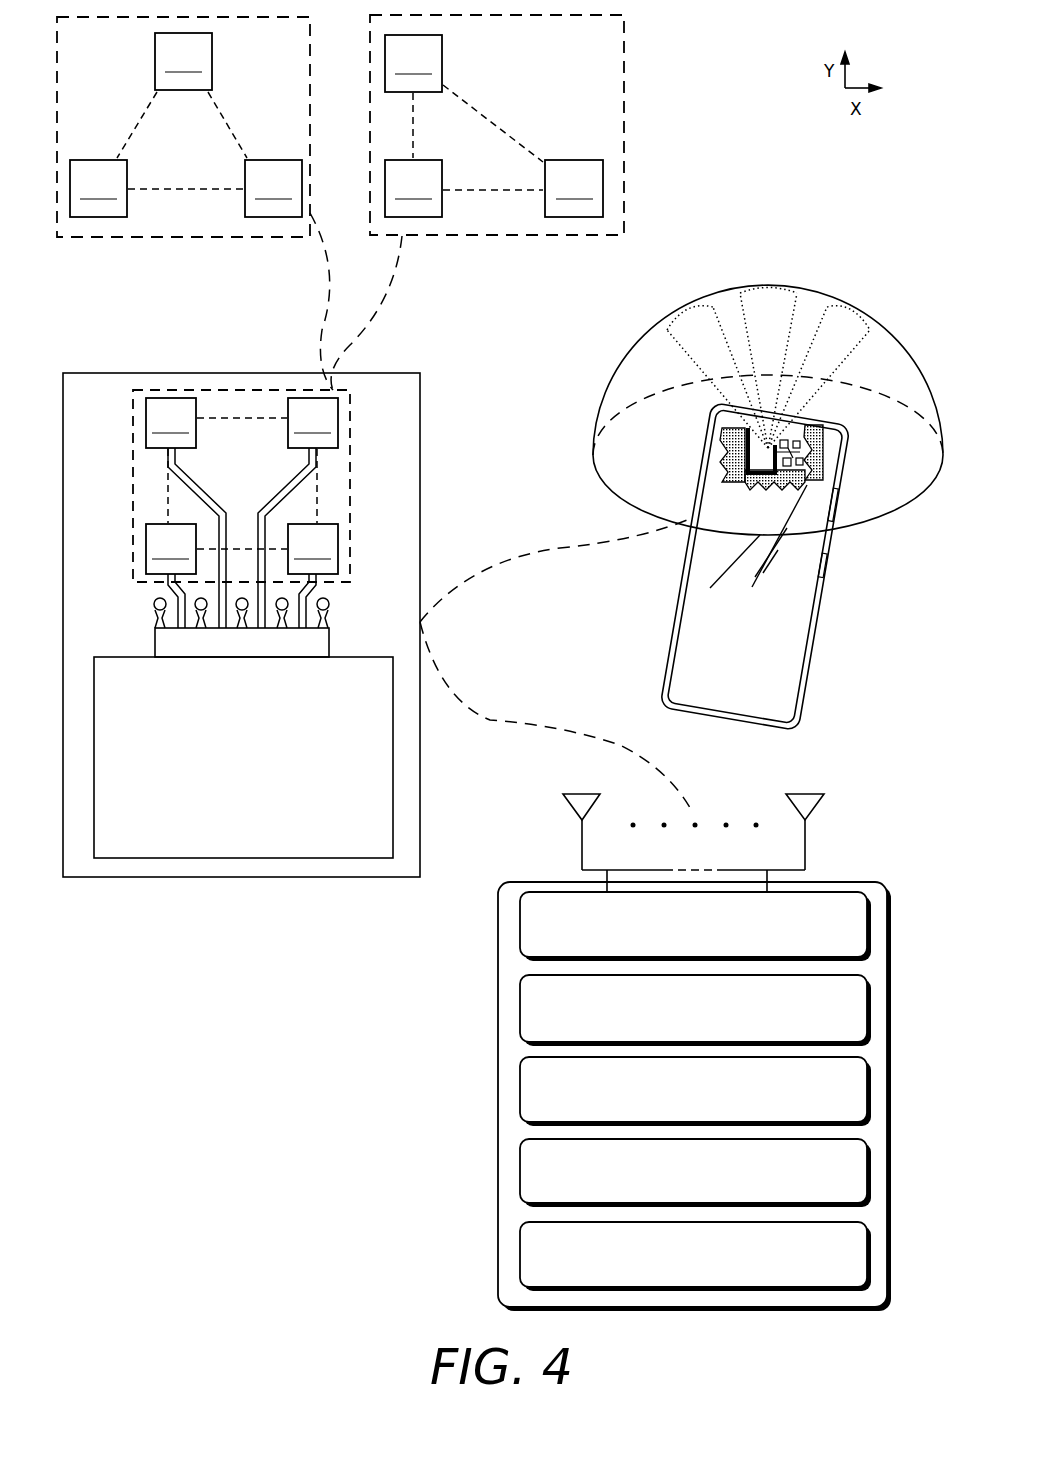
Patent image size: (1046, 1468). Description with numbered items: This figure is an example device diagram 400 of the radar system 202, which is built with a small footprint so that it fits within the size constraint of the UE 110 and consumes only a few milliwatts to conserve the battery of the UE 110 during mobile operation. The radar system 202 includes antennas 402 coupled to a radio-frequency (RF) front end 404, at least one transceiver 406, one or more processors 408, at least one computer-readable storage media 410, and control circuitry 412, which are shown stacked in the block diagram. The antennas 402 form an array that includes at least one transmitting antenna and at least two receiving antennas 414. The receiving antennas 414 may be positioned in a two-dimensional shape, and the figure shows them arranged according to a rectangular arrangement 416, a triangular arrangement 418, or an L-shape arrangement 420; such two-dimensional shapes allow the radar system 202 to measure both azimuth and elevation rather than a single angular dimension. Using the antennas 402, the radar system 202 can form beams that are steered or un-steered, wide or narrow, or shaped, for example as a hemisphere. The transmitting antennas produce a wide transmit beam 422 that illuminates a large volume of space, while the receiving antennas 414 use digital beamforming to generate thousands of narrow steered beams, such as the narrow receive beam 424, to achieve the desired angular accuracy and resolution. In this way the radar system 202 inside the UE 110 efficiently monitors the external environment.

The UE 110 is at (820, 648).
The radar system 202 is at (490, 660).
The device diagram 400 is at (664, 1052).
The antennas 402 is at (855, 831).
The radio-frequency (RF) front end 404 is at (766, 948).
The transceiver 406 is at (675, 1032).
The processors 408 is at (675, 1113).
The computer-readable storage media 410 is at (783, 1195).
The control circuitry 412 is at (695, 1256).
The receiving antennas 414 is at (339, 549).
The rectangular arrangement 416 is at (359, 486).
The triangular arrangement 418 is at (293, 238).
The L-shape arrangement 420 is at (428, 238).
The wide transmit beam 422 is at (653, 380).
The narrow receive beam 424 is at (766, 312).